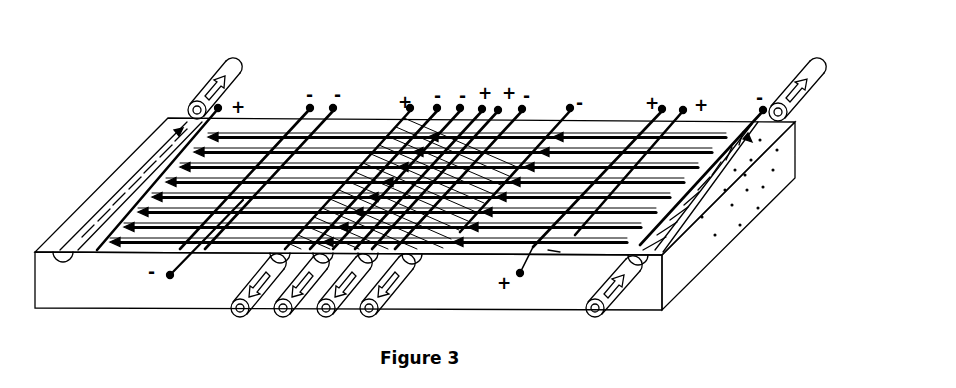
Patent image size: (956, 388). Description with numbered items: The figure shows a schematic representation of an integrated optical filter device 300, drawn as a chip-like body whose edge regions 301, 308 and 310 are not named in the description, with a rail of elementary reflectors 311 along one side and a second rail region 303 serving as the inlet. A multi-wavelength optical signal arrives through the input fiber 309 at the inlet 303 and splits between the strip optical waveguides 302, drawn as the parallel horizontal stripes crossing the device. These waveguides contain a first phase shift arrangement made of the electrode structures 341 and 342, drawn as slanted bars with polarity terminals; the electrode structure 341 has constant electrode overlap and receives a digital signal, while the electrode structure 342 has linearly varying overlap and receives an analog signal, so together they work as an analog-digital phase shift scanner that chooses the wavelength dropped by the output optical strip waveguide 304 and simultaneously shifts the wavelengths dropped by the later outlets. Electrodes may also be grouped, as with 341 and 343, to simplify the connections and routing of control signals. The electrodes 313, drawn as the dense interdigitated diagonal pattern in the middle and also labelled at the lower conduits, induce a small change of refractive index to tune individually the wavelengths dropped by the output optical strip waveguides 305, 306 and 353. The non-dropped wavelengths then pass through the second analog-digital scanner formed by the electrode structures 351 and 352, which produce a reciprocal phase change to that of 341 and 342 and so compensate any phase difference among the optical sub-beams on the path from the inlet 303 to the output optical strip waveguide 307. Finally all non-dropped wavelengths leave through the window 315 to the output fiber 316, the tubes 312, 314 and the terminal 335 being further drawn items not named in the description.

The integrated optical filter device 300 is at (125, 143).
The housing side face 301 is at (715, 237).
The strip optical waveguides 302 is at (533, 248).
The inlet 303 is at (670, 237).
The output optical strip waveguide 304 is at (533, 123).
The output optical strip waveguide 305 is at (497, 110).
The output optical strip waveguide 306 is at (436, 108).
The output optical strip waveguide 307 is at (97, 207).
The outlet port 308 is at (650, 258).
The input fiber 309 is at (620, 297).
The right edge rail 310 is at (710, 200).
The elementary reflectors 311 is at (122, 187).
The outlet conduit 312 is at (790, 82).
The electrodes 313 is at (362, 160).
The inlet conduit 314 is at (230, 312).
The window 315 is at (187, 118).
The output fiber 316 is at (207, 83).
The bus electrode 335 is at (760, 112).
The electrode structure 341 is at (715, 135).
The electrode structure 342 is at (573, 135).
The electrode group 343 is at (558, 252).
The electrode structure 351 is at (242, 250).
The electrode structure 352 is at (228, 136).
The output optical strip waveguide 353 is at (403, 130).